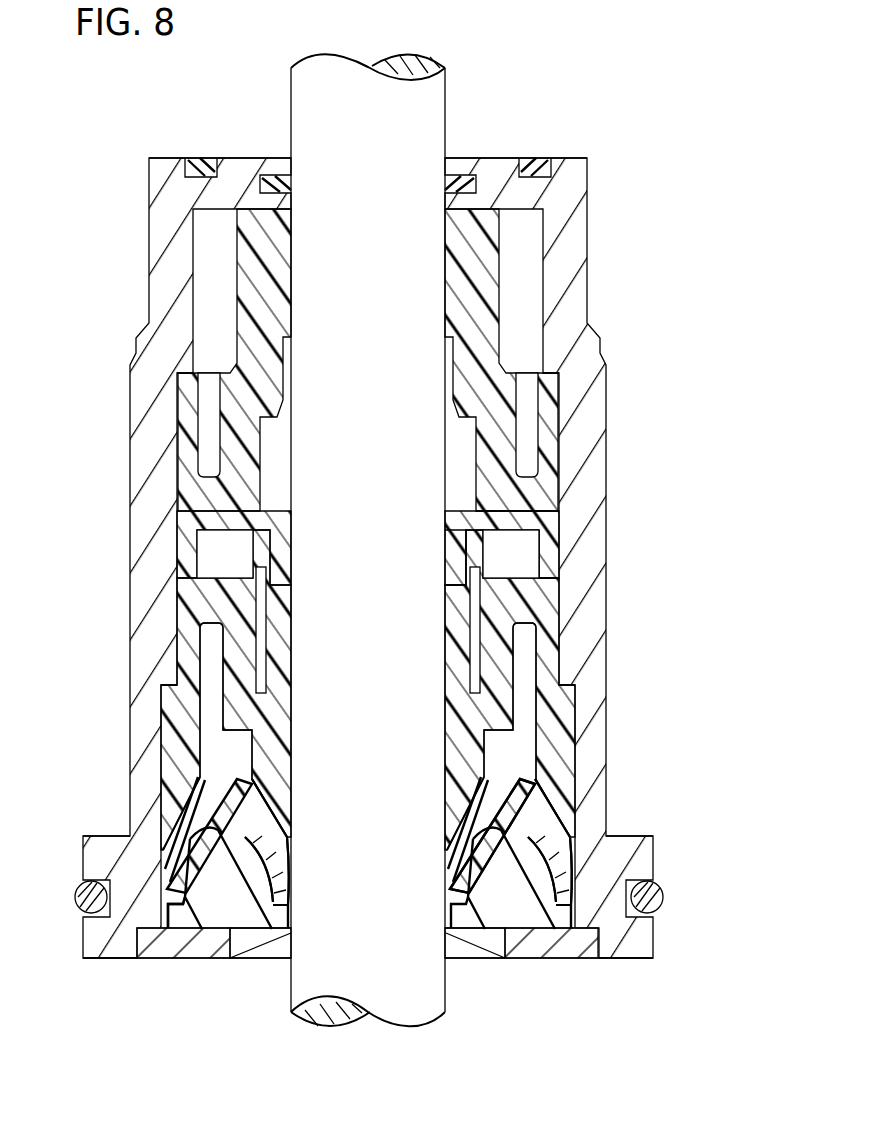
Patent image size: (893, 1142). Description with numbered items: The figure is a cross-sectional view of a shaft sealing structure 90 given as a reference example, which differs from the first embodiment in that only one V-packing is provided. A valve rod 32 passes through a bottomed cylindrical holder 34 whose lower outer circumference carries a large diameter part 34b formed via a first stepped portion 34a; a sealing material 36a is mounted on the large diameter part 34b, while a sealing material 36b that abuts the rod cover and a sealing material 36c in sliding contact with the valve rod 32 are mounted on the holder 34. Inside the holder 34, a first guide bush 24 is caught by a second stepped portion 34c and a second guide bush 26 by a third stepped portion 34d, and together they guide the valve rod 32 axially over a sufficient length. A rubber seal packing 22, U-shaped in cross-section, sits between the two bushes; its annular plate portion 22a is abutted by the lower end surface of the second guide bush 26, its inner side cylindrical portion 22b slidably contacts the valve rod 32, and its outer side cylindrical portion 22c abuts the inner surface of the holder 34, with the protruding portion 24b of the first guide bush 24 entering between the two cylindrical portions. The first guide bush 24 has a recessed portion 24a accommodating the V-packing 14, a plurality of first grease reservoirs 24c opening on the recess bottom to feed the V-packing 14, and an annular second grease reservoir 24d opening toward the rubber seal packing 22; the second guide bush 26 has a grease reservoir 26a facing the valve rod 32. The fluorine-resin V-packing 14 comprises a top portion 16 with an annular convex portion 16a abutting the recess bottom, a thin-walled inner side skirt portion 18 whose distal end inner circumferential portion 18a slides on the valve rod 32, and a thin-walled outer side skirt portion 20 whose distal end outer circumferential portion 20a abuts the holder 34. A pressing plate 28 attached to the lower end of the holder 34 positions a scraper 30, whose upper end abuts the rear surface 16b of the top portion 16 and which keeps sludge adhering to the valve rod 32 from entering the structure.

The shaft sealing structure 90 is at (594, 45).
The valve rod 32 is at (432, 103).
The holder 34 is at (590, 297).
The first stepped portion 34a is at (612, 850).
The large diameter part 34b is at (656, 880).
The second stepped portion 34c is at (578, 706).
The third stepped portion 34d is at (553, 385).
The sealing material 36a is at (662, 908).
The sealing material 36b is at (198, 160).
The sealing material 36c is at (273, 175).
The second guide bush 26 is at (236, 268).
The grease reservoir 26a is at (275, 455).
The rubber seal packing 22 is at (176, 520).
The annular plate portion 22a is at (512, 515).
The inner side cylindrical portion 22b is at (462, 540).
The outer side cylindrical portion 22c is at (550, 545).
The first guide bush 24 is at (176, 625).
The recessed portion 24a is at (185, 805).
The protruding portion 24b is at (213, 560).
The first grease reservoirs 24c is at (210, 722).
The second grease reservoir 24d is at (480, 660).
The outer side skirt portion 20 is at (178, 832).
The distal end outer circumferential portion 20a is at (166, 882).
The inner side skirt portion 18 is at (278, 852).
The distal end inner circumferential portion 18a is at (292, 890).
The top portion 16 is at (528, 800).
The annular convex portion 16a is at (556, 795).
The rear surface 16b is at (572, 870).
The V-packing 14 is at (553, 820).
The pressing plate 28 is at (542, 950).
The scraper 30 is at (510, 929).